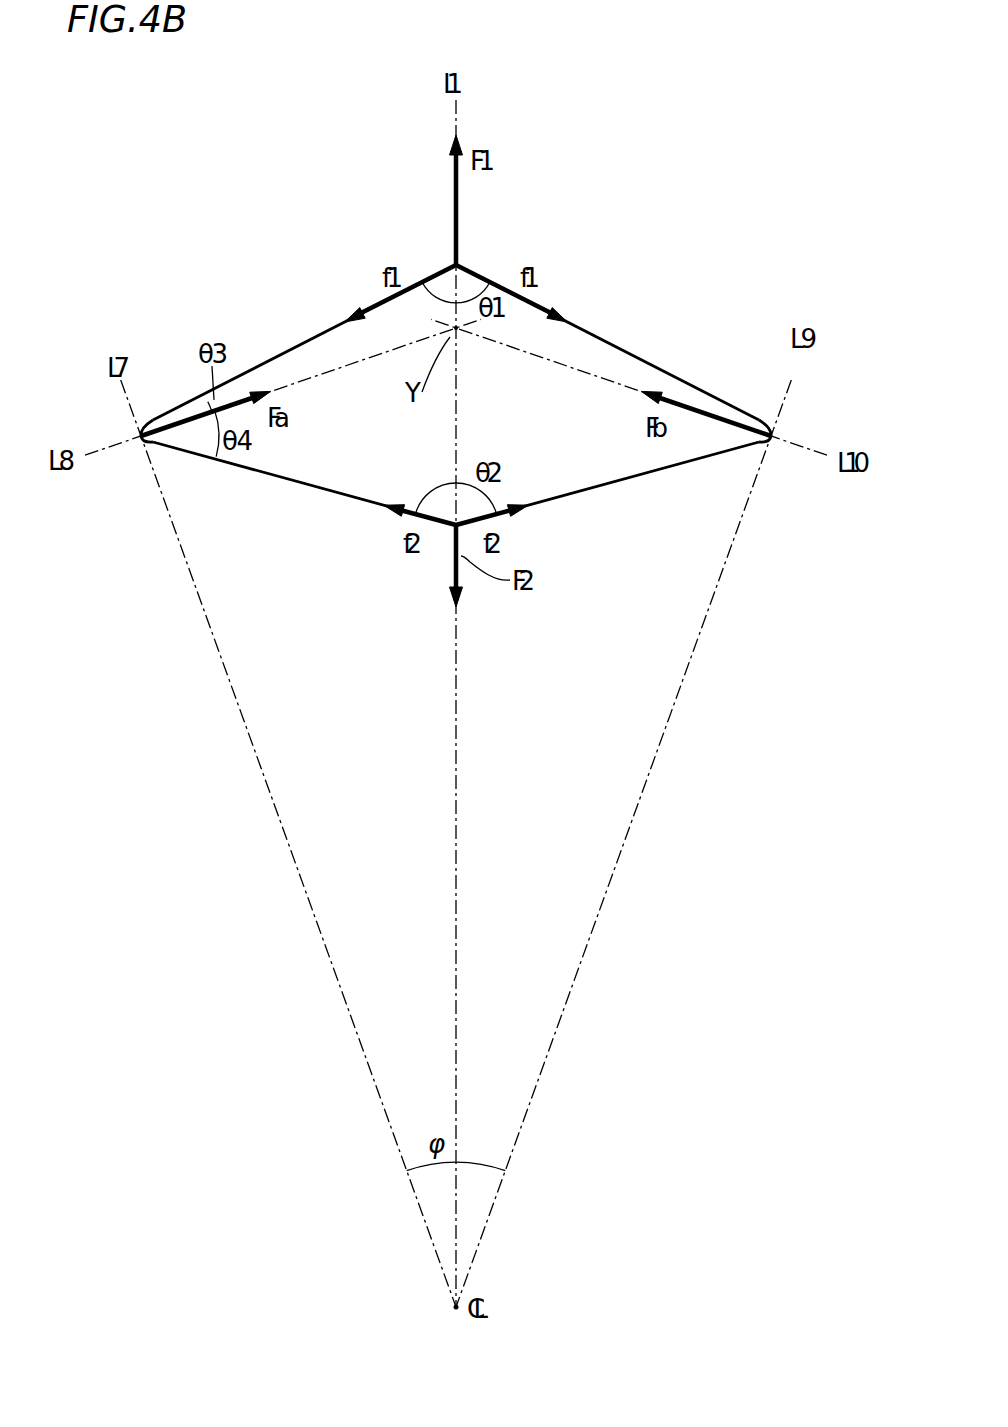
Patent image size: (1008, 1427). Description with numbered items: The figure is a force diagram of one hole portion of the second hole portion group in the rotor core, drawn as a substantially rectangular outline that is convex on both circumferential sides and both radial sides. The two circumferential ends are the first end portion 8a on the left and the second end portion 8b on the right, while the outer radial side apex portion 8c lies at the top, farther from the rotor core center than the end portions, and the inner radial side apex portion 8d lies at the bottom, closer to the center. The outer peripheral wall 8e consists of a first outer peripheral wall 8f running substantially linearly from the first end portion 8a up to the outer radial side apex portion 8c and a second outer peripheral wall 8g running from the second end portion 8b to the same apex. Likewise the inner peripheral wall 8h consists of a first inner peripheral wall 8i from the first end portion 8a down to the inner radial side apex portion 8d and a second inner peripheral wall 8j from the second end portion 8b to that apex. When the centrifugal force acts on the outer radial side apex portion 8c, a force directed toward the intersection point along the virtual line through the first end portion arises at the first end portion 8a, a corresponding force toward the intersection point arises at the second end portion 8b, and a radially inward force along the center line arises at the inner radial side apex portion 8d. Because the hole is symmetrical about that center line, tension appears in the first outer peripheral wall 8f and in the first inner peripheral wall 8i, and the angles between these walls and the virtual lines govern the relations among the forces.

The first end portion 8a is at (152, 444).
The second end portion 8b is at (765, 430).
The outer radial side apex portion 8c is at (462, 278).
The inner radial side apex portion 8d is at (450, 518).
The outer peripheral wall 8e is at (456, 325).
The first outer peripheral wall 8f is at (308, 338).
The second outer peripheral wall 8g is at (628, 347).
The inner peripheral wall 8h is at (456, 509).
The first inner peripheral wall 8i is at (304, 490).
The second inner peripheral wall 8j is at (605, 486).